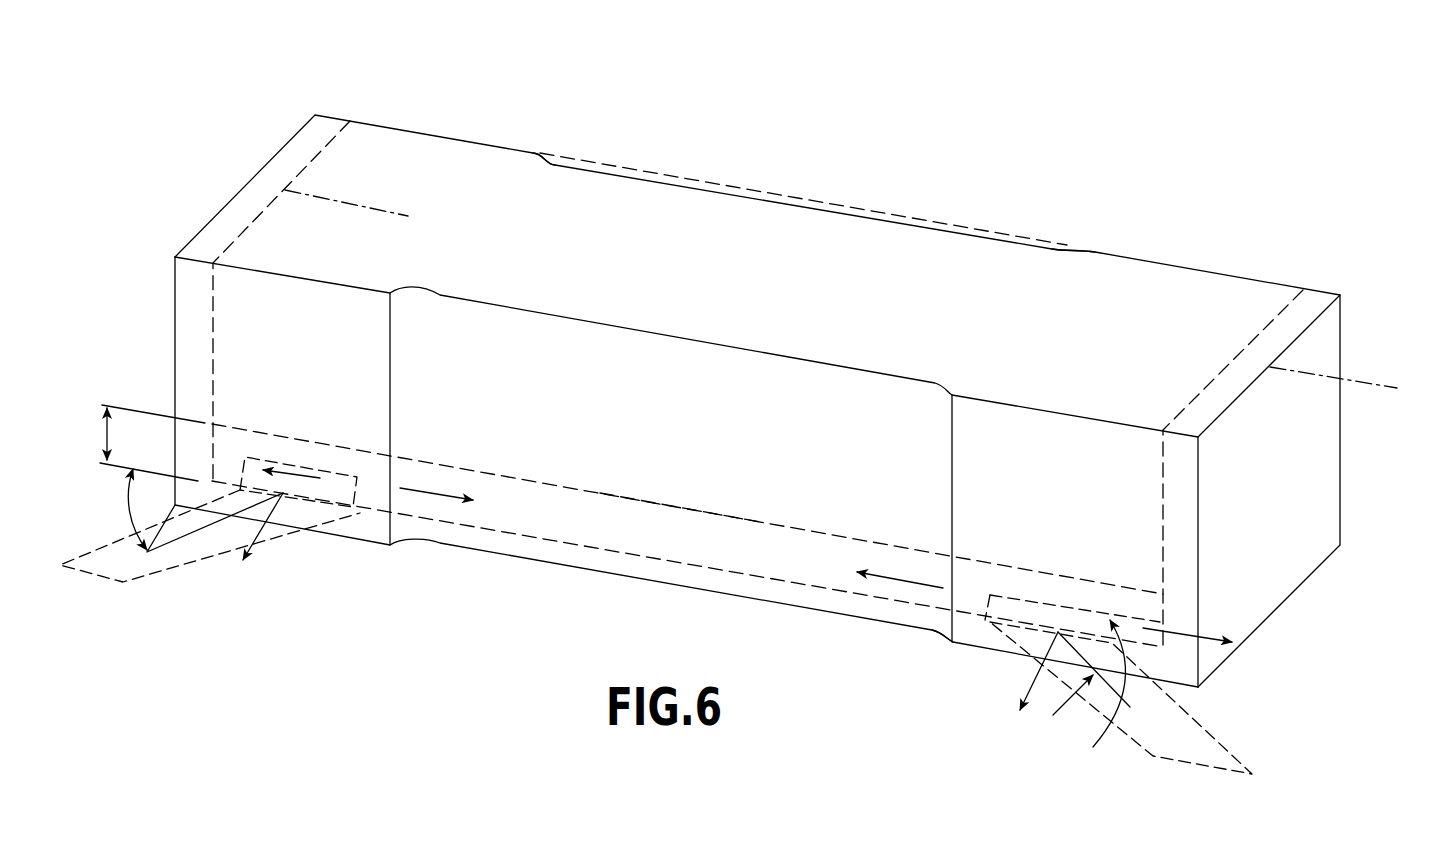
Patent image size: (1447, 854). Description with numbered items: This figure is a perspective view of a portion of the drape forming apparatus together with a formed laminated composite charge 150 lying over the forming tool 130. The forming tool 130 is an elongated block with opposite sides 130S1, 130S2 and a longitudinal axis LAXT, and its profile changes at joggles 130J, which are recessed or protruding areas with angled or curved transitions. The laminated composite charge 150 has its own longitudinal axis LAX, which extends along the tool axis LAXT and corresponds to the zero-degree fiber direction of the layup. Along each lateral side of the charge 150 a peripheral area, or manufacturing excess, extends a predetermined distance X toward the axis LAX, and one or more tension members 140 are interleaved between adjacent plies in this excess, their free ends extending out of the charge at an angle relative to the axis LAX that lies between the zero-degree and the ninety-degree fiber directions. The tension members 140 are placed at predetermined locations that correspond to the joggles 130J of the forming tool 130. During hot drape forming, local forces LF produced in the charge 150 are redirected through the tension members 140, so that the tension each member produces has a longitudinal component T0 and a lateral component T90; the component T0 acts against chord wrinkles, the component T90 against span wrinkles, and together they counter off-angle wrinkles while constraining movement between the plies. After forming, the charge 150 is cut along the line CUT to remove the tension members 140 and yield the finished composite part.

The forming tool 130 is at (1280, 580).
The side of the forming tool 130S1 is at (870, 173).
The side of the forming tool 130S2 is at (540, 593).
The joggle 130J is at (1012, 251).
The tension member 140 is at (123, 582).
The laminated composite charge 150 is at (1243, 347).
The longitudinal axis of the laminated composite charge LAX is at (347, 200).
The longitudinal axis of the forming tool LAXT is at (1355, 382).
The predetermined distance X is at (106, 436).
The lateral component of tension force T90 is at (280, 503).
The longitudinal component of tension force T0 is at (330, 490).
The local forces LF is at (417, 492).
The cut line CUT is at (733, 520).